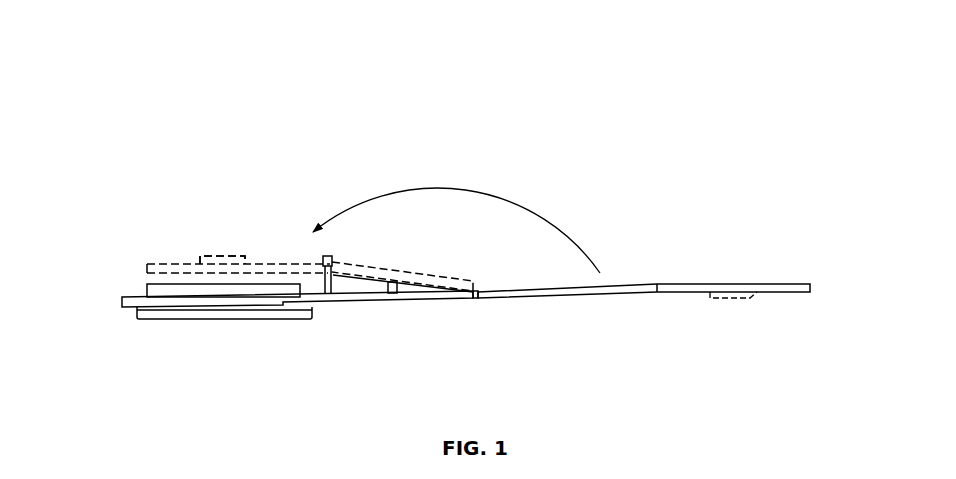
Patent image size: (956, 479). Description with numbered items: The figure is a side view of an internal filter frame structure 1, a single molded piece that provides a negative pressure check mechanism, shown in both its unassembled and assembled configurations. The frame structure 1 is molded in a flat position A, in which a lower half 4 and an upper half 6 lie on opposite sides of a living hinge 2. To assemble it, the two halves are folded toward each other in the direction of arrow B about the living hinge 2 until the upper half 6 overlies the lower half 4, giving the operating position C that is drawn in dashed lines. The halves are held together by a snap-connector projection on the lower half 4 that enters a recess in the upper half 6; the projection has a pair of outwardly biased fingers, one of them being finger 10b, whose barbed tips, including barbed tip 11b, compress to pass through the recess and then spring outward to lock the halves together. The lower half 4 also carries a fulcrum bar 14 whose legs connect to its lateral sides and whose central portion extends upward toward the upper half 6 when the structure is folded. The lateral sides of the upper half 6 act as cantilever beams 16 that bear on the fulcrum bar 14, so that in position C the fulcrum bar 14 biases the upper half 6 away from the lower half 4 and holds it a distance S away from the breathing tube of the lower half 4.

The frame structure 1 is at (483, 72).
The distance S is at (147, 277).
The lower half 4 is at (203, 319).
The upper half 6 is at (183, 262).
The operating position C is at (266, 261).
The cantilever beams 16 is at (406, 268).
The barbed tip 11b is at (335, 258).
The fulcrum bar 14 is at (400, 296).
The finger 10b is at (330, 297).
The living hinge 2 is at (478, 300).
The flat position A is at (630, 284).
The folding direction B is at (483, 192).